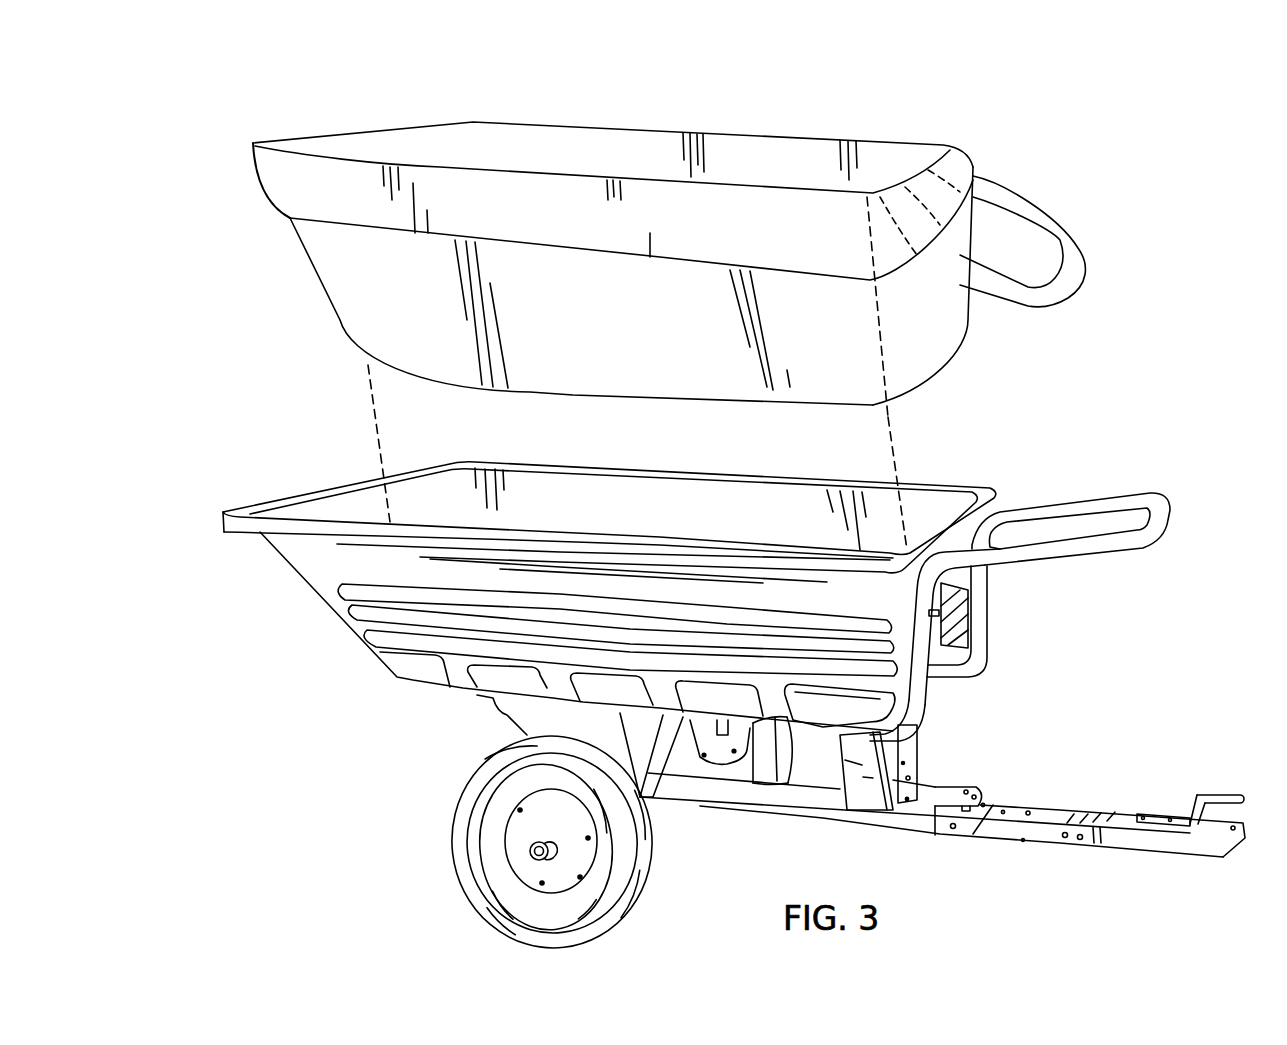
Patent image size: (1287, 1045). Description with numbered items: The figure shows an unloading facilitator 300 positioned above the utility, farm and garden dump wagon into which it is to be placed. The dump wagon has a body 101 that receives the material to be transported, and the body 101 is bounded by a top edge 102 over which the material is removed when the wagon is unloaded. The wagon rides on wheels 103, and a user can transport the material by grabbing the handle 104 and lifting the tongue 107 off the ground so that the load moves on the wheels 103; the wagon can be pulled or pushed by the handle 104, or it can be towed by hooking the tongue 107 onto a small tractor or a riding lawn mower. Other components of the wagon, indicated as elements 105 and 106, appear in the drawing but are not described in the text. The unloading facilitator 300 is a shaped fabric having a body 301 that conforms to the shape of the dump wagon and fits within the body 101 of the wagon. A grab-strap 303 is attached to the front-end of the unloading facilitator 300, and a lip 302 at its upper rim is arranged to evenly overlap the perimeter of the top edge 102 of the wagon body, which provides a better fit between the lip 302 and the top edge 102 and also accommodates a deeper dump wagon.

The unloading facilitator 300 is at (797, 66).
The body 301 is at (337, 292).
The lip 302 is at (520, 190).
The grab-strap 303 is at (1030, 210).
The body 101 is at (300, 557).
The top edge 102 is at (991, 489).
The wheels 103 is at (610, 895).
The handle 104 is at (1087, 549).
The mounting bracket 105 is at (940, 793).
The wheel hub 106 is at (528, 852).
The tongue 107 is at (1167, 843).